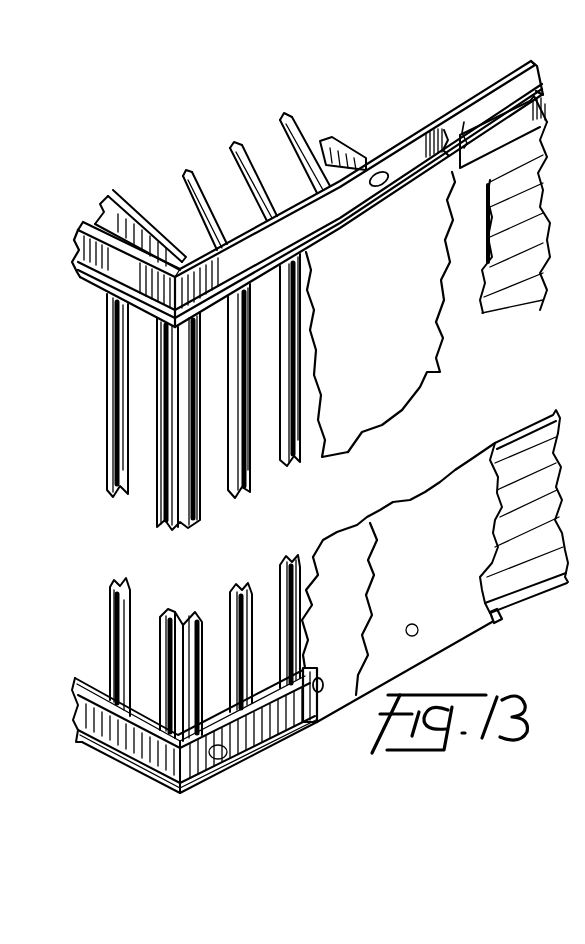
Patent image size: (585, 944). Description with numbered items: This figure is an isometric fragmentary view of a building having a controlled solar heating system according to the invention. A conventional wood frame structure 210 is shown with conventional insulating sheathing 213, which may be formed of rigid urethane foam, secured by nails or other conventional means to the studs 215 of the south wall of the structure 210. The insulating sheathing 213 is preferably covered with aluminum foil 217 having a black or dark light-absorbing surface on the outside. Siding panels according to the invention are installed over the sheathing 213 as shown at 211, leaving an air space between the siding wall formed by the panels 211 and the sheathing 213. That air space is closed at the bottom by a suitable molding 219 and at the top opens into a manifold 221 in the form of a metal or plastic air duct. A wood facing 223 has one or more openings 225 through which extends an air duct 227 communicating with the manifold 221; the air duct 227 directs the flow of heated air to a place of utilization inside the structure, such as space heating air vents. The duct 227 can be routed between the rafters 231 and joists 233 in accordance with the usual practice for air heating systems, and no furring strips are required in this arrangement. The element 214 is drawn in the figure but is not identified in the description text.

The wood frame structure 210 is at (78, 268).
The siding panels 211 is at (556, 244).
The insulating sheathing 213 is at (342, 450).
The bottom sheathing strip 214 is at (402, 582).
The studs 215 is at (284, 462).
The aluminum foil 217 is at (440, 370).
The molding 219 is at (514, 616).
The manifold 221 is at (503, 97).
The wood facing 223 is at (428, 152).
The openings 225 is at (392, 187).
The air duct 227 is at (312, 128).
The rafters 231 is at (257, 160).
The joists 233 is at (110, 202).